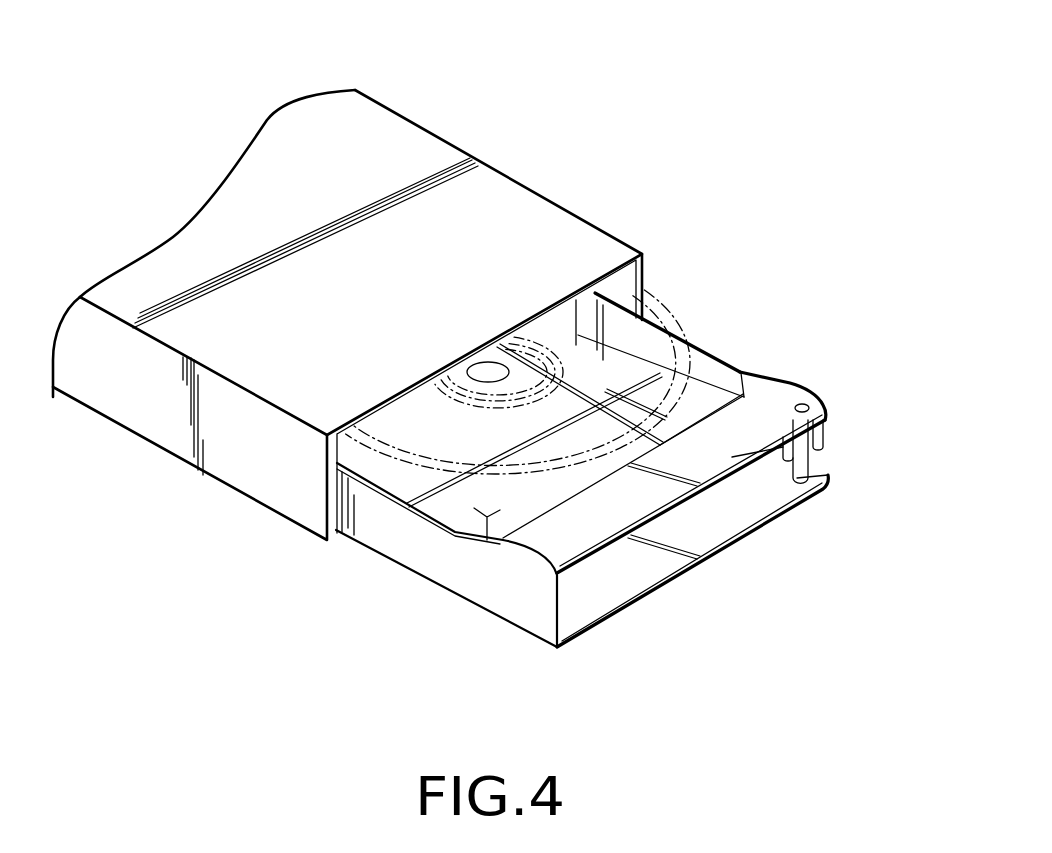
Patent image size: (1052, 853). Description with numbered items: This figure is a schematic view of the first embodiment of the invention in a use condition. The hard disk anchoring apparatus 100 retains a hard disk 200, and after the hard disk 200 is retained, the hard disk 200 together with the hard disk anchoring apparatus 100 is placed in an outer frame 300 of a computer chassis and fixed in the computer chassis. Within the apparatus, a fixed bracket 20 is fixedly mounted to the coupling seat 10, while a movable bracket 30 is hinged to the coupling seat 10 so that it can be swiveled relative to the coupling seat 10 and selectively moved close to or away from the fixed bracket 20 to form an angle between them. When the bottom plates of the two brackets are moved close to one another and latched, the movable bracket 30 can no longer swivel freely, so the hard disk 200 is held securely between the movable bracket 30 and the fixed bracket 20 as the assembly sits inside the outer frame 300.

The outer frame 300 is at (455, 160).
The hard disk 200 is at (543, 335).
The movable bracket 30 is at (683, 358).
The hard disk anchoring apparatus 100 is at (779, 351).
The fixed bracket 20 is at (420, 573).
The coupling seat 10 is at (677, 580).